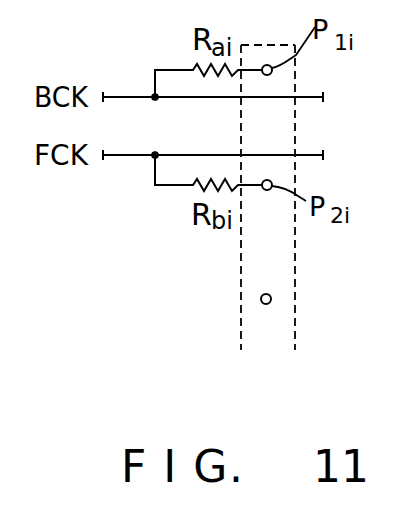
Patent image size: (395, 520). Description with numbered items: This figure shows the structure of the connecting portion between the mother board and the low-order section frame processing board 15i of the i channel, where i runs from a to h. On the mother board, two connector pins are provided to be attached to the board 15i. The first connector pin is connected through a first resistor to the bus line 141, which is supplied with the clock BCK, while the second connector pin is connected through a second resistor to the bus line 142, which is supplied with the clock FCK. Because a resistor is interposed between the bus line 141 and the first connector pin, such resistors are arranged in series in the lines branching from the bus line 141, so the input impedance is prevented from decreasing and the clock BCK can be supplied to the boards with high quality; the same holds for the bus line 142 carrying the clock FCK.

The bus line 141 is at (128, 97).
The bus line 142 is at (126, 157).
The low-order section frame processing board 15i is at (297, 310).